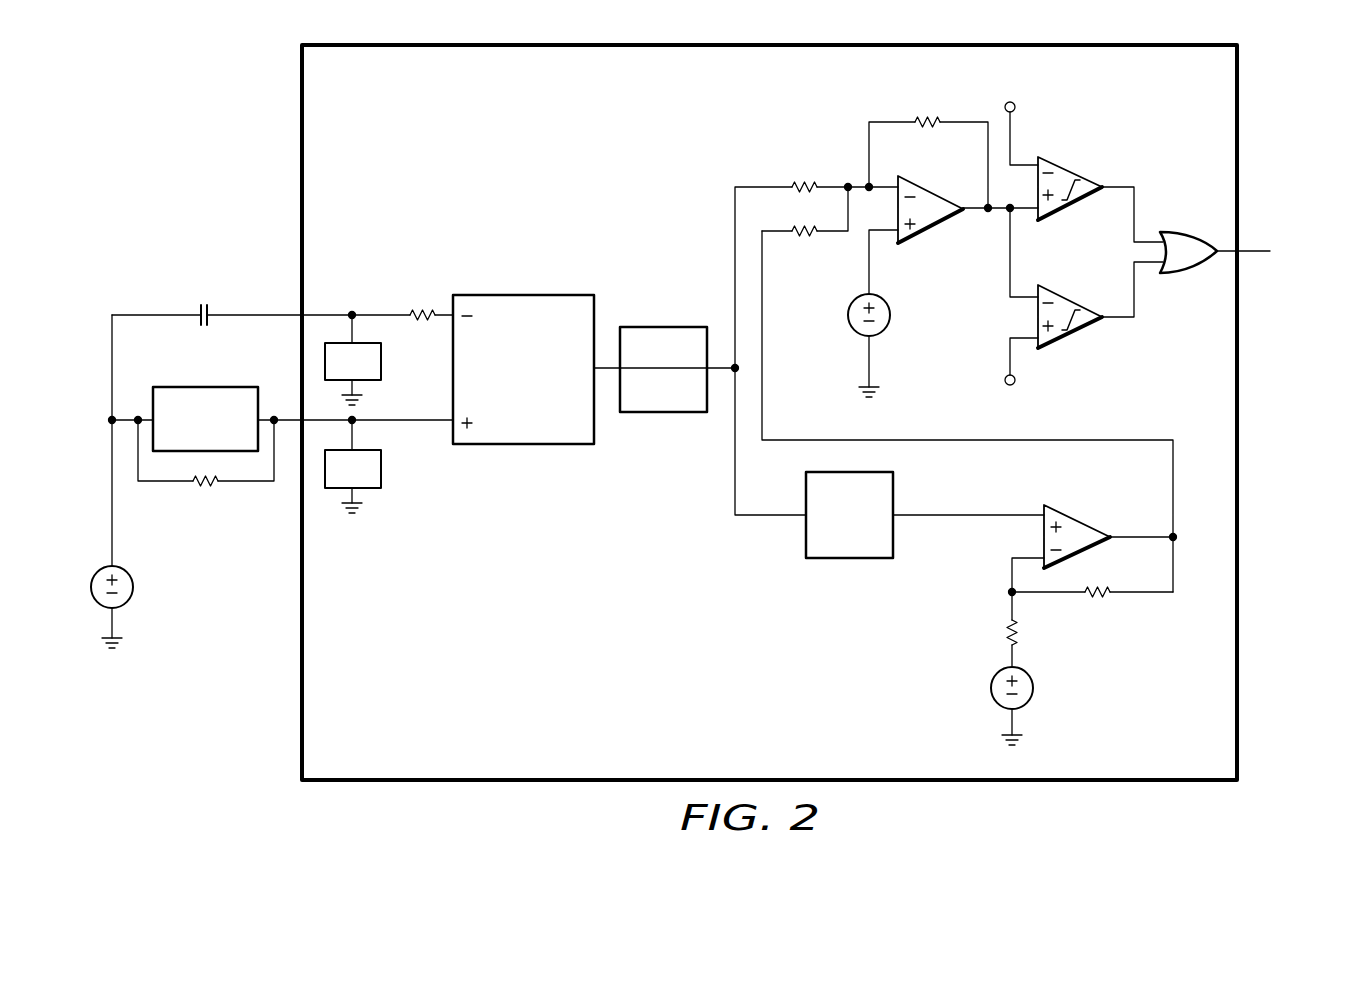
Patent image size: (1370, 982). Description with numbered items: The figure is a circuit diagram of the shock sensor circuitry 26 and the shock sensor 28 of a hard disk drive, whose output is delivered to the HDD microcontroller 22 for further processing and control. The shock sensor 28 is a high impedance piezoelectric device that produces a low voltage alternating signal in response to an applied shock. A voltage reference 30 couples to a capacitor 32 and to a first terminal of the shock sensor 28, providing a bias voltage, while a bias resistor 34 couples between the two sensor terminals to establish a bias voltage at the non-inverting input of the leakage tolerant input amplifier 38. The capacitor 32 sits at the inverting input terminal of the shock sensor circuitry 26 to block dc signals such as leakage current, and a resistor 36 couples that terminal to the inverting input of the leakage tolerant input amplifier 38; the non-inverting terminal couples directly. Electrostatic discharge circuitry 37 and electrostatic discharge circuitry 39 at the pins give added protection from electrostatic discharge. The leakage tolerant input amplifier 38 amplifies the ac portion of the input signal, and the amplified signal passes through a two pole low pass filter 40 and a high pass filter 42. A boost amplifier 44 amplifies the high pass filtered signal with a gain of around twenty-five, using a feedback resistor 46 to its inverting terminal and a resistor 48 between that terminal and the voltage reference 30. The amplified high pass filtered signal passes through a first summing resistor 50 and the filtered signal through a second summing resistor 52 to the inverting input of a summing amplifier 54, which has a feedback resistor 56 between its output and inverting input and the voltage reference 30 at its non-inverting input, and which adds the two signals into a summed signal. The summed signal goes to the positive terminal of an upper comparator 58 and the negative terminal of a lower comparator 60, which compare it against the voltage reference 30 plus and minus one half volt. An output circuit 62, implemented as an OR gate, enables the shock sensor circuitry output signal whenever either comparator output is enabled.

The HDD microcontroller 22 is at (1293, 258).
The shock sensor circuitry 26 is at (364, 740).
The shock sensor 28 is at (182, 387).
The voltage reference 30 is at (92, 598).
The capacitor 32 is at (203, 305).
The bias resistor 34 is at (205, 487).
The resistor 36 is at (424, 309).
The electrostatic discharge circuitry 37 is at (381, 362).
The leakage tolerant input amplifier 38 is at (528, 444).
The electrostatic discharge circuitry 39 is at (381, 470).
The two pole low pass filter 40 is at (660, 326).
The high pass filter 42 is at (851, 558).
The boost amplifier 44 is at (1080, 526).
The feedback resistor 46 is at (1105, 598).
The resistor 48 is at (1005, 632).
The first summing resistor 50 is at (803, 238).
The second summing resistor 52 is at (802, 181).
The summing amplifier 54 is at (932, 189).
The feedback resistor 56 is at (924, 116).
The upper comparator 58 is at (1072, 172).
The lower comparator 60 is at (1070, 337).
The output circuit 62 is at (1190, 232).